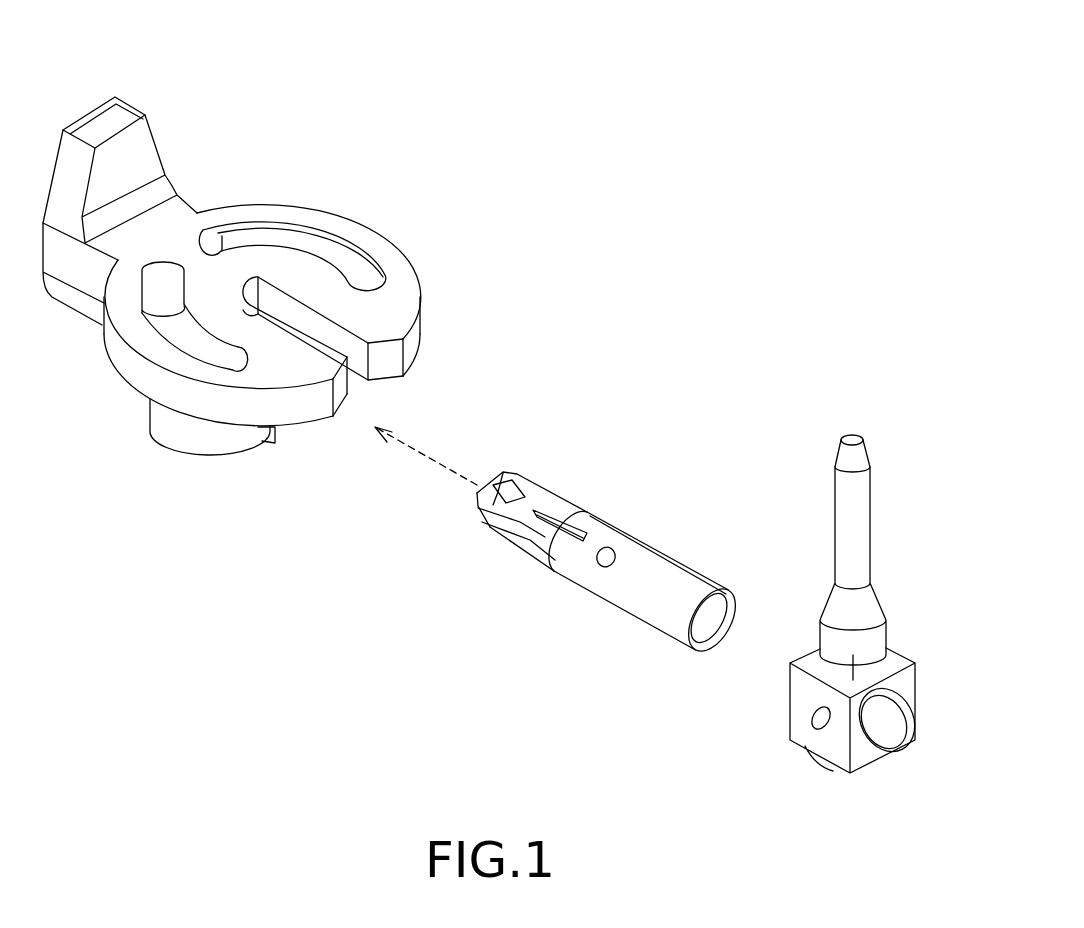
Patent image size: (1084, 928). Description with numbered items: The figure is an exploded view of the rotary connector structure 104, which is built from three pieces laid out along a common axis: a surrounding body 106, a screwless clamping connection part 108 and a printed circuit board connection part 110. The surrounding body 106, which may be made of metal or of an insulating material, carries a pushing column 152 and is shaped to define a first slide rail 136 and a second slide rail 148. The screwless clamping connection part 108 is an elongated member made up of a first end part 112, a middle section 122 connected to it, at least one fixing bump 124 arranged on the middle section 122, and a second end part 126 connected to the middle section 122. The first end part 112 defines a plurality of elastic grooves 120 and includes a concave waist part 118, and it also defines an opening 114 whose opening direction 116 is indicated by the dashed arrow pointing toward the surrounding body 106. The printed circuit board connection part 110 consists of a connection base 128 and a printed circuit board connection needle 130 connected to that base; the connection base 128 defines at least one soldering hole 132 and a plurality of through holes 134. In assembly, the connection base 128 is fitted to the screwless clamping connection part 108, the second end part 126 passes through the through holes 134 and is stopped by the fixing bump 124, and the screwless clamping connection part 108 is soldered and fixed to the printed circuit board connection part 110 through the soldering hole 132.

The rotary connector structure 104 is at (507, 30).
The surrounding body 106 is at (369, 216).
The screwless clamping connection part 108 is at (708, 556).
The printed circuit board connection part 110 is at (863, 409).
The first end part 112 is at (556, 467).
The opening 114 is at (466, 501).
The opening direction 116 is at (427, 453).
The concave waist part 118 is at (513, 536).
The elastic grooves 120 is at (560, 521).
The middle section 122 is at (643, 516).
The fixing bump 124 is at (598, 556).
The second end part 126 is at (670, 630).
The connection base 128 is at (793, 708).
The printed circuit board connection needle 130 is at (865, 510).
The soldering hole 132 is at (820, 720).
The through holes 134 is at (882, 732).
The first slide rail 136 is at (298, 228).
The second slide rail 148 is at (163, 277).
The pushing column 152 is at (153, 148).